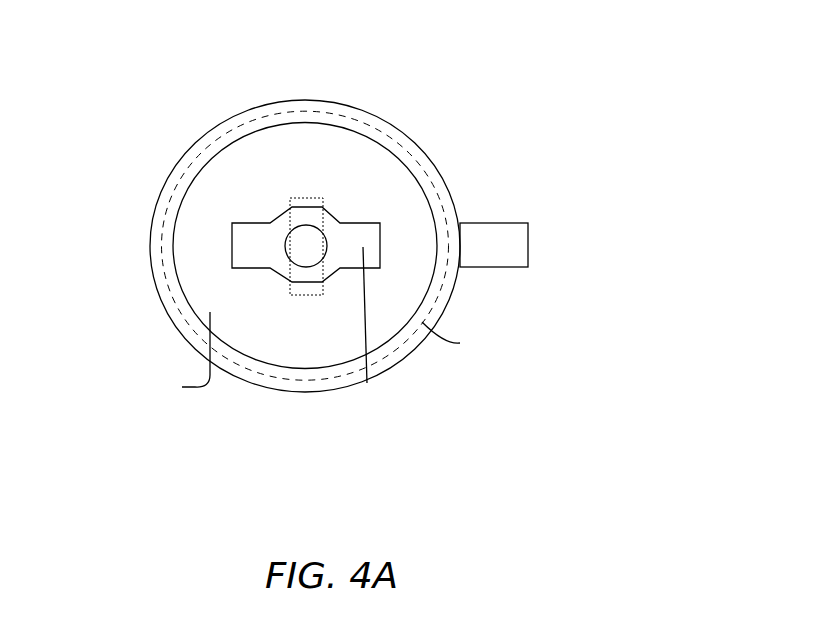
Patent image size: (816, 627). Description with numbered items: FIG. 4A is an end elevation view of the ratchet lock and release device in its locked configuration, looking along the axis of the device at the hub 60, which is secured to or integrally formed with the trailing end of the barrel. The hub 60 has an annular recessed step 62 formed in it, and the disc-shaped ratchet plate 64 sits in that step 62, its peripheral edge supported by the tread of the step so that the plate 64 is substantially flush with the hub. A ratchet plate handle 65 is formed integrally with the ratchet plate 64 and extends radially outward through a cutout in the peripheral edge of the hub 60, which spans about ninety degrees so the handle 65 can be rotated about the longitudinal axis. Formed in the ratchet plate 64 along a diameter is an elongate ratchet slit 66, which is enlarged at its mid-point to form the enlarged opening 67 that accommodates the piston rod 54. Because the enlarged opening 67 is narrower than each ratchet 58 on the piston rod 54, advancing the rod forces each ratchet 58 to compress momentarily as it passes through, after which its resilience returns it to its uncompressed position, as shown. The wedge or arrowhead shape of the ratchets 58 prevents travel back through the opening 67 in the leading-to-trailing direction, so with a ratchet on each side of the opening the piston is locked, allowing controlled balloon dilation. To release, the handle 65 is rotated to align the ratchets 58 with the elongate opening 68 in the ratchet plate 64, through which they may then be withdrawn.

The piston rod 54 is at (285, 247).
The ratchet 58 is at (305, 196).
The hub 60 is at (428, 158).
The annular recessed step 62 is at (455, 339).
The ratchet plate 64 is at (180, 355).
The ratchet plate handle 65 is at (513, 223).
The ratchet slit 66 is at (273, 275).
The enlarged opening 67 is at (328, 215).
The elongate opening 68 is at (367, 383).